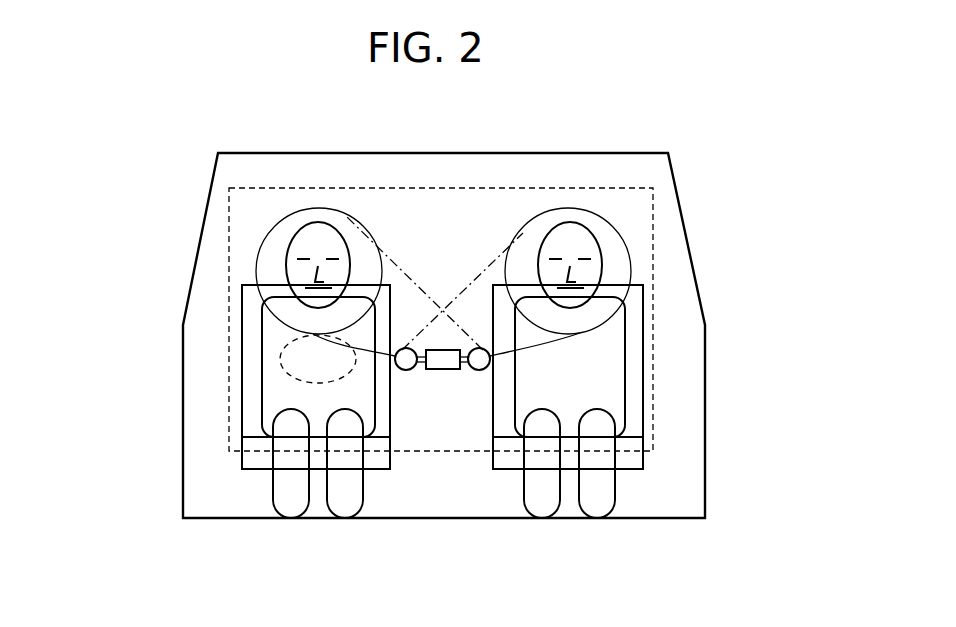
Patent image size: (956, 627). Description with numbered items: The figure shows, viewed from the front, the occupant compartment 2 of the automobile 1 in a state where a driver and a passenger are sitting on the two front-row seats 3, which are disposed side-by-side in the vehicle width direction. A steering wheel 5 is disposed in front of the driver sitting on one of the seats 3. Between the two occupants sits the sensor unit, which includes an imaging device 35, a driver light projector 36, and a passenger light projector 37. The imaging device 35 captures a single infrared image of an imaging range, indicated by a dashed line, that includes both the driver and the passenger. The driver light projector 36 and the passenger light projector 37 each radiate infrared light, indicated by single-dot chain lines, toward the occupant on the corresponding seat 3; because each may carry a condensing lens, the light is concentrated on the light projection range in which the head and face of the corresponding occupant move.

The automobile 1 is at (199, 162).
The occupant compartment 2 is at (547, 174).
The seat 3 is at (240, 457).
The steering wheel 5 is at (300, 346).
The imaging device 35 is at (437, 370).
The driver light projector 36 is at (480, 370).
The passenger light projector 37 is at (404, 370).